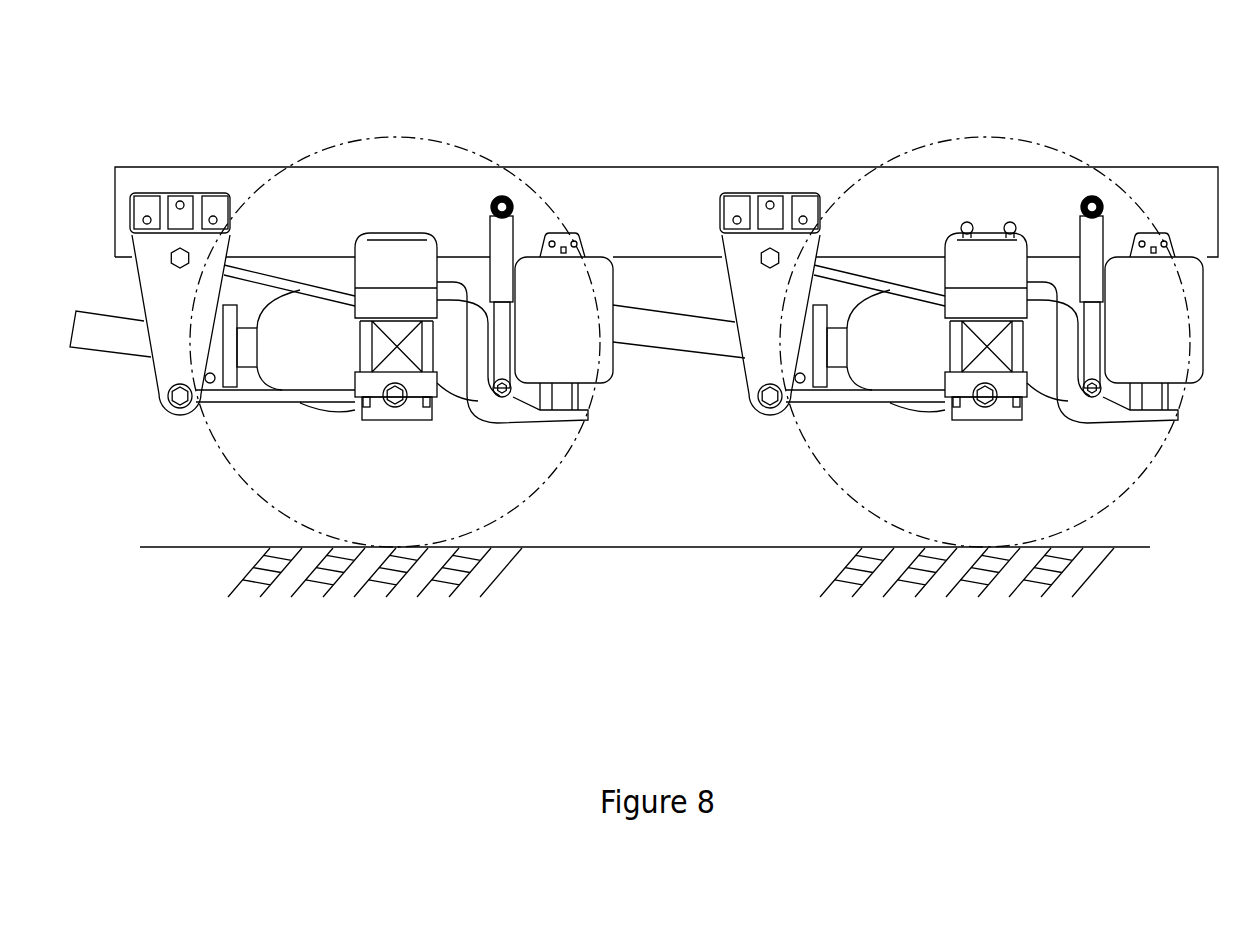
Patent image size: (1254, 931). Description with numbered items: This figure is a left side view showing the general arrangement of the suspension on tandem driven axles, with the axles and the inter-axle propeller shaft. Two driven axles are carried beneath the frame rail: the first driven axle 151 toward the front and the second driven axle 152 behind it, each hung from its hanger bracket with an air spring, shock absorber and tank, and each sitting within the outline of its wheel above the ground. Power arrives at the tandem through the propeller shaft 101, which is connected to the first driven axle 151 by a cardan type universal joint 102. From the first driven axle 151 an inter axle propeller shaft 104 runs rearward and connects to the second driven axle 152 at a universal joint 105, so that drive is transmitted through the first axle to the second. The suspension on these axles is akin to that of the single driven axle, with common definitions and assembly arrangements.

The propeller shaft 101 is at (110, 330).
The cardan type universal joint 102 is at (213, 333).
The inter axle propeller shaft 104 is at (683, 333).
The universal joint 105 is at (837, 242).
The first driven axle 151 is at (305, 353).
The second driven axle 152 is at (887, 405).